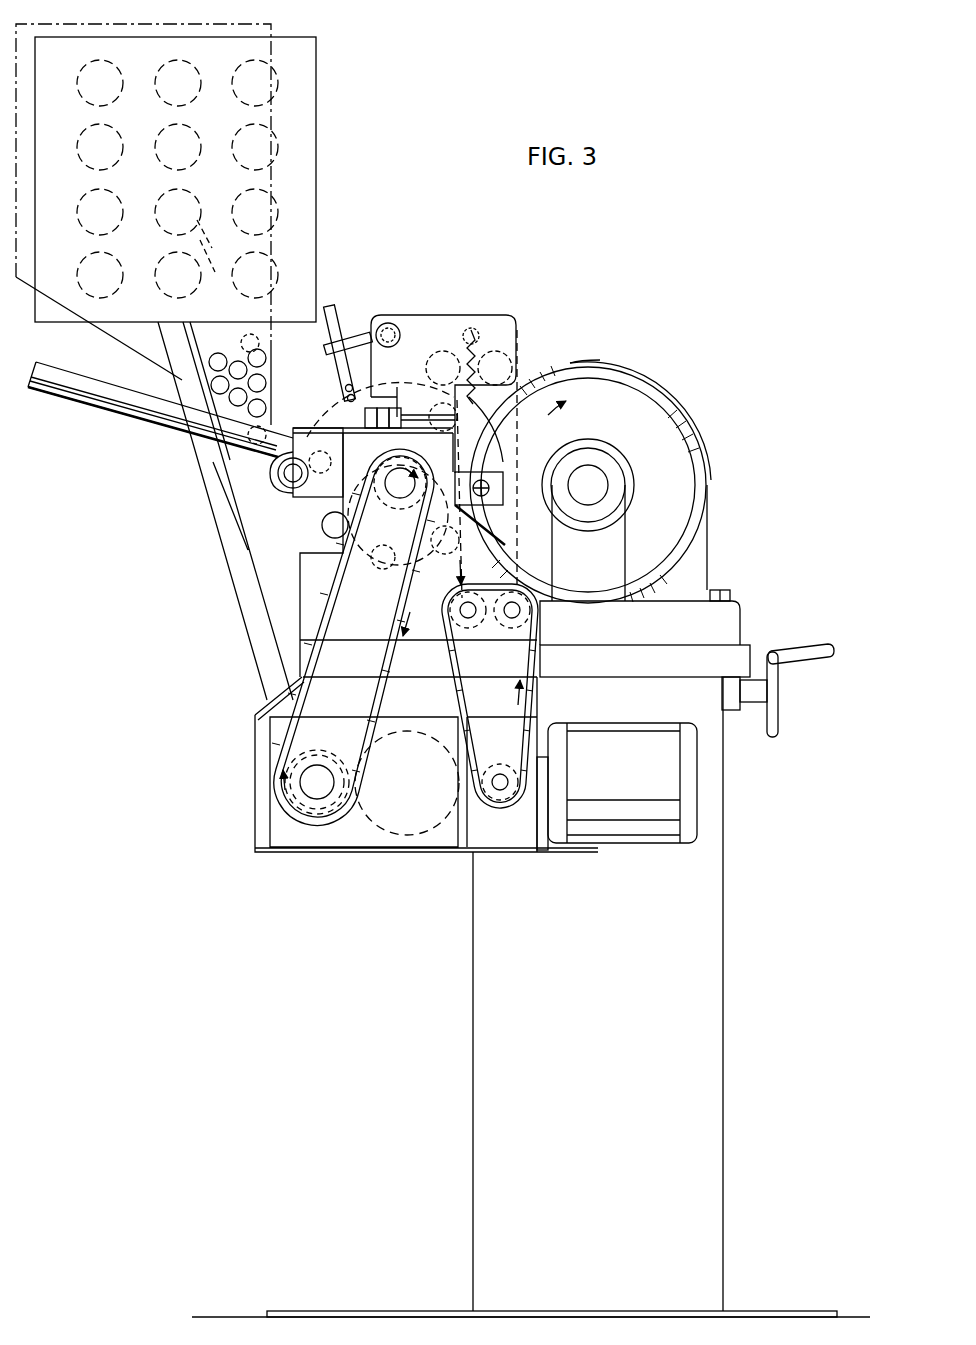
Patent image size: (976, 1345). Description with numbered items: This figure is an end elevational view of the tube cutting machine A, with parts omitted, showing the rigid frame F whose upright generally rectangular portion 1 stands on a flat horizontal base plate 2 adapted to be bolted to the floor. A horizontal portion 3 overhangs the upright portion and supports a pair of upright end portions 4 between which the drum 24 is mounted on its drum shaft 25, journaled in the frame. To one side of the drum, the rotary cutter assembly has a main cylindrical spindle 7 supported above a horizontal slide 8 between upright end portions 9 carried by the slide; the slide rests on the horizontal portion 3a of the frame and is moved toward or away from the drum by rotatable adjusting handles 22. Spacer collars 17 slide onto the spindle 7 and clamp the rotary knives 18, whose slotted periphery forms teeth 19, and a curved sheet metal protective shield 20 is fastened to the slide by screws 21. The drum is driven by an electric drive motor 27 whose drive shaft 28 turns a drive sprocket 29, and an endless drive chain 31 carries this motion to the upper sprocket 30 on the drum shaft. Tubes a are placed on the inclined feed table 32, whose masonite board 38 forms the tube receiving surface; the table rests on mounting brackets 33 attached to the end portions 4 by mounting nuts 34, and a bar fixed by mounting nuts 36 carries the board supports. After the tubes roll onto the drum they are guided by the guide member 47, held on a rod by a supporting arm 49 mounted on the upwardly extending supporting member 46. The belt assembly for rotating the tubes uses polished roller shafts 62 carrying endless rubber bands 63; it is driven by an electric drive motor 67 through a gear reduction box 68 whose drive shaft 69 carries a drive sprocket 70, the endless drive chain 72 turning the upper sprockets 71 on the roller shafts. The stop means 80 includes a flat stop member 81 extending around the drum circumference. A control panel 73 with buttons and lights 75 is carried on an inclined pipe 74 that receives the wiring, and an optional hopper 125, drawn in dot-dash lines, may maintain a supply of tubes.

The upright generally rectangular portion 1 is at (473, 980).
The base plate 2 is at (373, 1310).
The horizontal portion 3 is at (403, 665).
The horizontal portion of the frame 3a is at (658, 666).
The upright end portions 4 is at (372, 632).
The main cylindrical spindle 7 is at (590, 494).
The horizontal slide 8 is at (602, 628).
The upright end portions 9 is at (612, 526).
The spacer collars 17 is at (595, 440).
The rotary knives 18 is at (672, 478).
The teeth 19 is at (682, 420).
The protective shield 20 is at (632, 370).
The screws 21 is at (732, 595).
The adjusting handles 22 is at (775, 722).
The drum 24 is at (342, 503).
The drum shaft 25 is at (405, 492).
The electric drive motor 27 is at (368, 828).
The drive shaft 28 is at (307, 794).
The drive sprocket 29 is at (305, 760).
The upper sprocket 30 is at (386, 548).
The endless drive chain 31 is at (328, 605).
The inclined feed table 32 is at (66, 397).
The mounting brackets 33 is at (294, 495).
The mounting nuts 34 is at (381, 412).
The mounting nuts 36 is at (278, 478).
The masonite board 38 is at (120, 403).
The supporting member 46 is at (444, 318).
The guide member 47 is at (328, 408).
The supporting arm 49 is at (358, 310).
The roller shafts 62 is at (462, 612).
The endless rubber bands 63 is at (515, 390).
The electric drive motor 67 is at (643, 838).
The gear reduction box 68 is at (498, 838).
The drive shaft 69 is at (484, 788).
The drive sprocket 70 is at (474, 756).
The upper sprockets 71 is at (505, 620).
The endless drive chain 72 is at (525, 694).
The control panel 73 is at (316, 143).
The inclined pipe 74 is at (258, 583).
The lights 75 is at (197, 220).
The stop means 80 is at (505, 512).
The stop member 81 is at (505, 458).
The hopper 125 is at (128, 347).
The tube cutting machine A is at (690, 390).
The rigid frame F is at (727, 910).
The tubes a is at (264, 352).